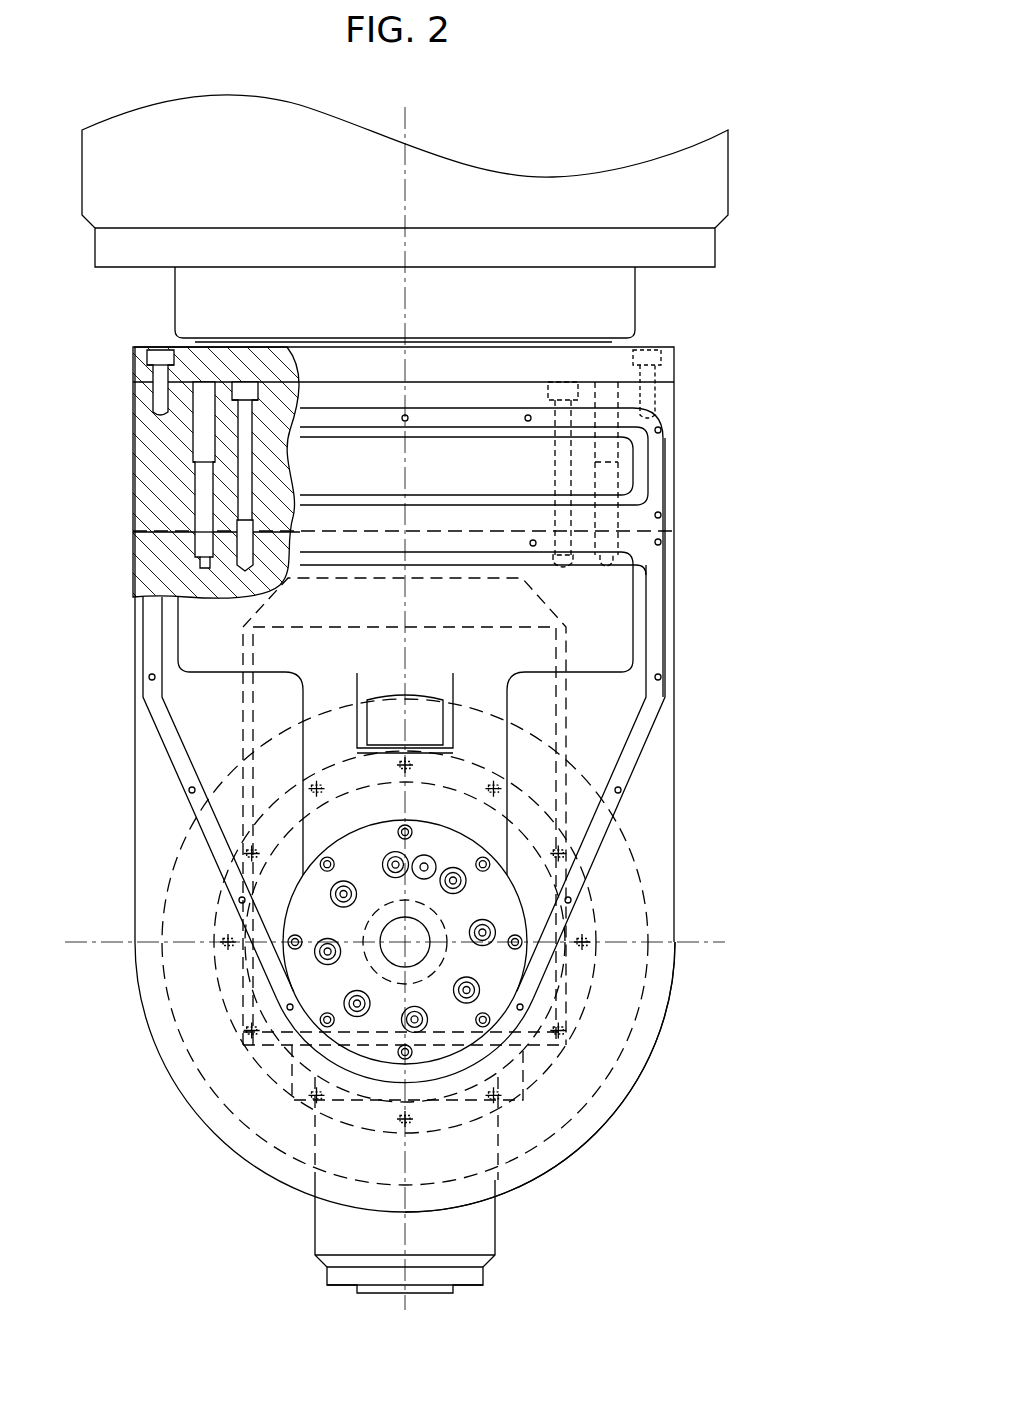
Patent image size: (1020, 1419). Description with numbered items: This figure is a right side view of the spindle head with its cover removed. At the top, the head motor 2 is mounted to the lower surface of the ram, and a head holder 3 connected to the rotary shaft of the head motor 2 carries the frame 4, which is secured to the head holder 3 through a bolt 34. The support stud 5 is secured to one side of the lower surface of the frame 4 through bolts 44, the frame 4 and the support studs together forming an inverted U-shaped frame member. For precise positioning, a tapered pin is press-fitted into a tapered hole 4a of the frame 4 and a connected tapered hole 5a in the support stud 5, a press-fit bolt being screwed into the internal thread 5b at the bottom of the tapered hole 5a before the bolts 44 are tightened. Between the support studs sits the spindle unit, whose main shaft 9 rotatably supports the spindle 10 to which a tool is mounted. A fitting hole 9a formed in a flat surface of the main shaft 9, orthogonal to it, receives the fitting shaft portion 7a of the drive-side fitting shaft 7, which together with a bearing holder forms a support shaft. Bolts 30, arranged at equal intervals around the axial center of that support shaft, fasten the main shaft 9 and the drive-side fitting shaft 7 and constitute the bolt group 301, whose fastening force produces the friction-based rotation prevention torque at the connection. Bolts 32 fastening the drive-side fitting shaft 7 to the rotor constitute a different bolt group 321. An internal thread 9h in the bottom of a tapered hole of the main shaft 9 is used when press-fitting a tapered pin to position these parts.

The head motor 2 is at (446, 177).
The head holder 3 is at (678, 380).
The frame 4 is at (137, 440).
The tapered hole 4a is at (205, 500).
The support stud 5 is at (135, 703).
The tapered hole 5a is at (205, 552).
The internal thread 5b is at (205, 568).
The drive-side fitting shaft 7 is at (370, 1117).
The fitting shaft portion 7a is at (380, 1033).
The main shaft 9 is at (343, 705).
The fitting hole 9a is at (365, 952).
The internal thread 9h is at (424, 855).
The spindle 10 is at (495, 1275).
The bolt 30 is at (417, 1020).
The bolt group 301 is at (650, 1204).
The bolt 32 is at (597, 943).
The bolt group 321 is at (704, 1135).
The bolt 34 is at (172, 356).
The bolt 44 is at (245, 382).